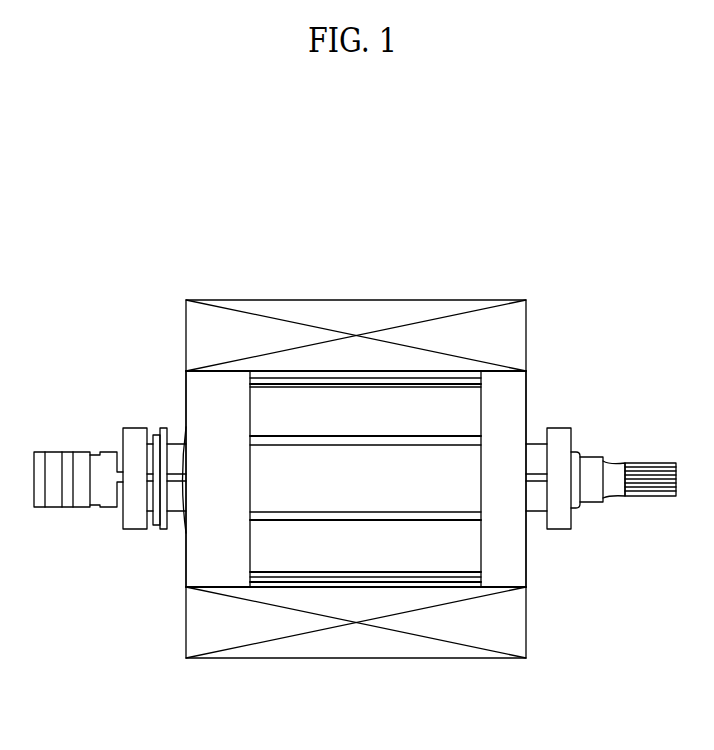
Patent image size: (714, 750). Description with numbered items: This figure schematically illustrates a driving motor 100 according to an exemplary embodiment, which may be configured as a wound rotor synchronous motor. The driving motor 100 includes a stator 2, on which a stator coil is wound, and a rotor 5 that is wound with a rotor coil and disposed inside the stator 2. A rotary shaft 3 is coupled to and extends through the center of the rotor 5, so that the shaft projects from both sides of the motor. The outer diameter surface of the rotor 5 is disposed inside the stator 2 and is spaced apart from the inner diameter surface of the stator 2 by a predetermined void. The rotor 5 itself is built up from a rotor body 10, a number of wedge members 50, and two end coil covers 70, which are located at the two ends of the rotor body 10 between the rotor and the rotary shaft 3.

The driving motor 100 is at (371, 218).
The stator 2 is at (410, 298).
The end coil cover 70 is at (195, 394).
The wedge member 50 is at (294, 536).
The rotor 5 is at (365, 595).
The rotor body 10 is at (421, 552).
The rotary shaft 3 is at (176, 512).